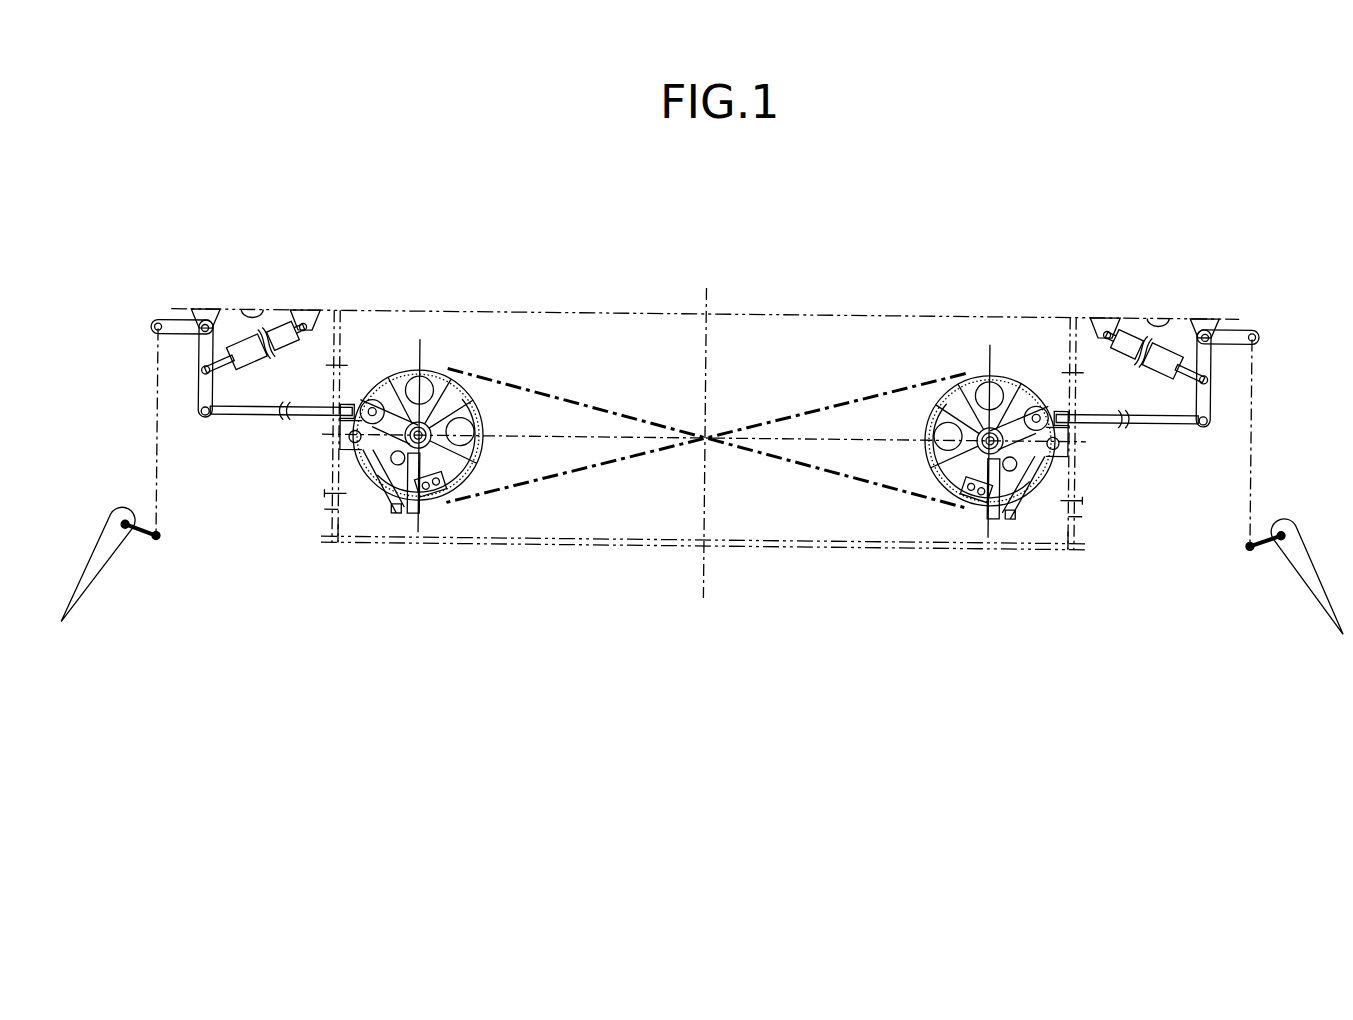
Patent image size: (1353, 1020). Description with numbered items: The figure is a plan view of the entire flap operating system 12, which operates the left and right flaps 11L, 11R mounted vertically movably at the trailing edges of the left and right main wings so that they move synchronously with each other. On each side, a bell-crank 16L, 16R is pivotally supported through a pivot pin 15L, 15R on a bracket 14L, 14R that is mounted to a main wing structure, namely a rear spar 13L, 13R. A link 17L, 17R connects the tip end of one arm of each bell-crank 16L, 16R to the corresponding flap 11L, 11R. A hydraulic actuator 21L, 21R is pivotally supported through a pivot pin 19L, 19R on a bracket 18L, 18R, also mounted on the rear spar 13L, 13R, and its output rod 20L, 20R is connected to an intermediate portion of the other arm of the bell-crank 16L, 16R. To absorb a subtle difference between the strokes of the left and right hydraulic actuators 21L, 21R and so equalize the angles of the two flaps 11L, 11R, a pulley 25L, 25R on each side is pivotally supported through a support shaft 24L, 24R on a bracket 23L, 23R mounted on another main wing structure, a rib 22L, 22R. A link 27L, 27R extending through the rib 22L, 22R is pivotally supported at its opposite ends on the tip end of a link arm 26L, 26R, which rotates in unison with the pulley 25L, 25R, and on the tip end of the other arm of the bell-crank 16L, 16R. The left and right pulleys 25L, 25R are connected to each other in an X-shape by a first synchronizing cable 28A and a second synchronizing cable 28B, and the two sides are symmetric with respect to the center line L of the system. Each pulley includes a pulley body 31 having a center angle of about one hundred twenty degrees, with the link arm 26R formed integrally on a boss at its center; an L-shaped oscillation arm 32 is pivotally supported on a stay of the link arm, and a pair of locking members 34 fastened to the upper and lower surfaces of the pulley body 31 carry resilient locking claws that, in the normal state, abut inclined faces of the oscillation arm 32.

The left flap 11L is at (105, 572).
The right flap 11R is at (1300, 587).
The flap operating system 12 is at (797, 300).
The left rear spar 13L is at (260, 303).
The right rear spar 13R is at (1148, 310).
The left bracket 14L is at (318, 322).
The right bracket 14R is at (1103, 330).
The left pivot pin 15L is at (212, 313).
The right pivot pin 15R is at (1210, 317).
The left bell-crank 16L is at (187, 407).
The right bell-crank 16R is at (1220, 430).
The left link 17L is at (157, 420).
The right link 17R is at (1253, 432).
The left actuator bracket 18L is at (205, 325).
The right actuator bracket 18R is at (1201, 322).
The left actuator pivot pin 19L is at (307, 337).
The right actuator pivot pin 19R is at (1103, 340).
The left output rod 20L is at (212, 357).
The right output rod 20R is at (1208, 365).
The left hydraulic actuator 21L is at (275, 320).
The right hydraulic actuator 21R is at (1135, 333).
The left rib 22L is at (345, 498).
The right rib 22R is at (1080, 508).
The left pulley bracket 23L is at (345, 545).
The right pulley bracket 23R is at (1070, 545).
The left support shaft 24L is at (433, 423).
The right support shaft 24R is at (973, 423).
The left pulley 25L is at (437, 360).
The right pulley 25R is at (971, 362).
The left link arm 26L is at (390, 398).
The right link arm 26R is at (1003, 398).
The left link 27L is at (263, 418).
The right link 27R is at (1103, 430).
The first synchronizing cable 28A is at (622, 407).
The second synchronizing cable 28B is at (810, 410).
The pulley body 31 is at (493, 477).
The oscillation arm 32 is at (388, 505).
The locking member 34 is at (440, 512).
The center line L is at (705, 337).